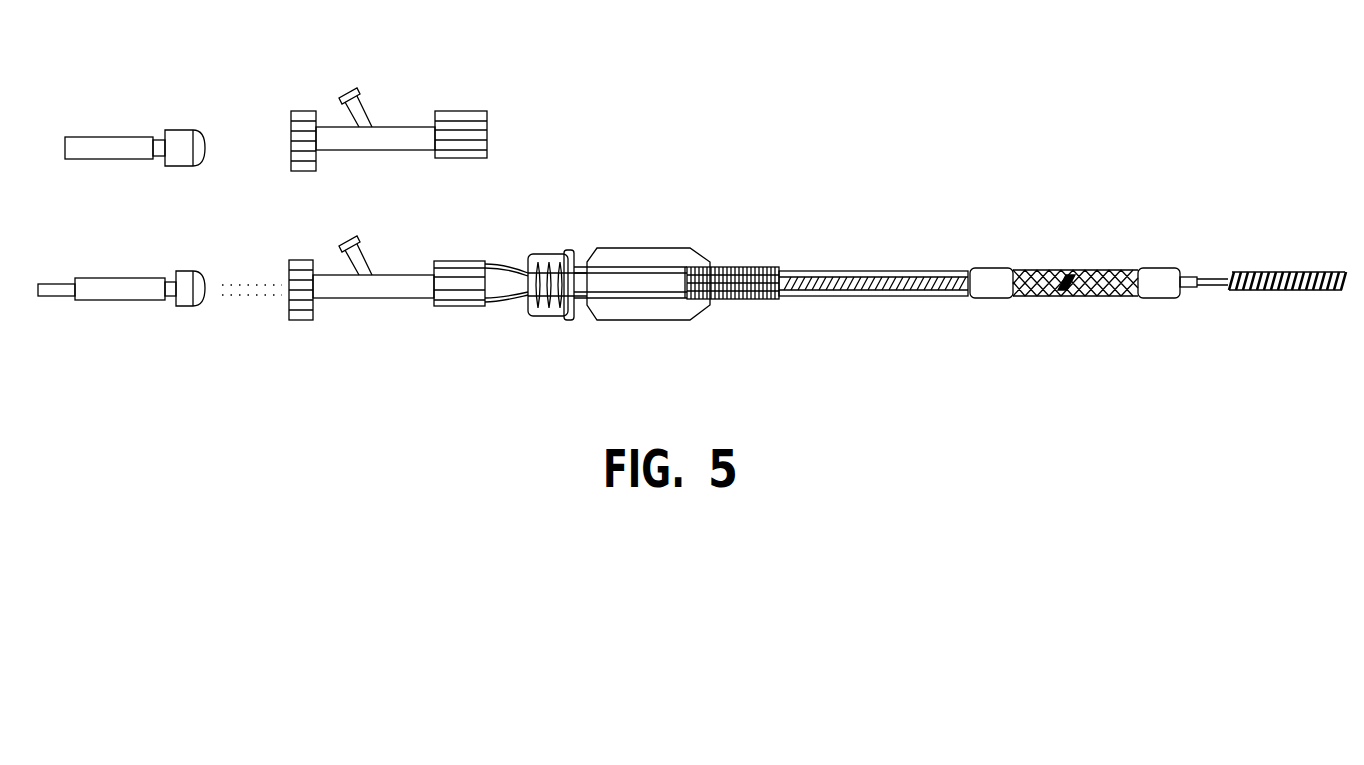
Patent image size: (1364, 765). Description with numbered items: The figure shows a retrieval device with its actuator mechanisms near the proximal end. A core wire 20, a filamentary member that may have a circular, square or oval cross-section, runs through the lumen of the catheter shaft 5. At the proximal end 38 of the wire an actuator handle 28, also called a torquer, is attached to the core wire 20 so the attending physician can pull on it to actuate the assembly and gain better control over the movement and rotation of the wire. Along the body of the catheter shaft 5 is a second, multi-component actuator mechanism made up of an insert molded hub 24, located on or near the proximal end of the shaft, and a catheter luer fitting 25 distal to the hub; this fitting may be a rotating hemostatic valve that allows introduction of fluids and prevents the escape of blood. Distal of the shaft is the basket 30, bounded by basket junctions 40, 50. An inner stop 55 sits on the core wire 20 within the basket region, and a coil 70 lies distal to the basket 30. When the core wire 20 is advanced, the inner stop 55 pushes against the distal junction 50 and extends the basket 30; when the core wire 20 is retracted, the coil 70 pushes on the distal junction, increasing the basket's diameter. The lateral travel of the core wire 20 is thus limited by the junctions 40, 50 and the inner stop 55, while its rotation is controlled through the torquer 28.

The catheter shaft 5 is at (828, 270).
The core wire 20 is at (252, 312).
The insert molded hub 24 is at (625, 310).
The catheter luer fitting 25 is at (415, 127).
The actuator handle 28 is at (98, 137).
The basket 30 is at (1035, 297).
The proximal end 38 is at (56, 297).
The basket junction 40 is at (980, 300).
The basket junction 50 is at (1160, 298).
The inner stop 55 is at (1060, 270).
The coil 70 is at (1275, 272).